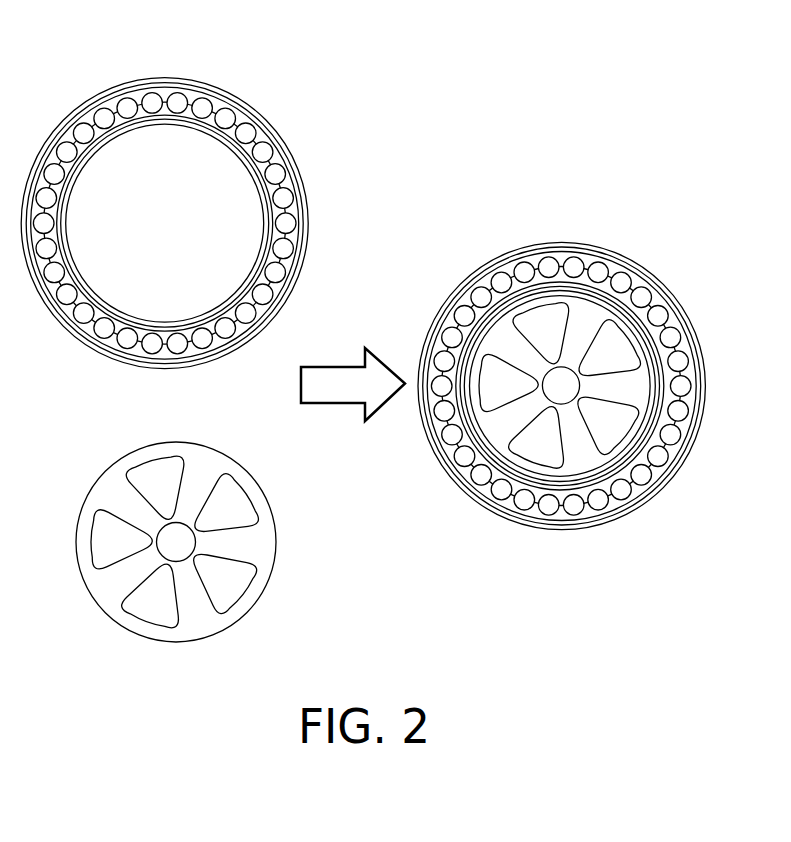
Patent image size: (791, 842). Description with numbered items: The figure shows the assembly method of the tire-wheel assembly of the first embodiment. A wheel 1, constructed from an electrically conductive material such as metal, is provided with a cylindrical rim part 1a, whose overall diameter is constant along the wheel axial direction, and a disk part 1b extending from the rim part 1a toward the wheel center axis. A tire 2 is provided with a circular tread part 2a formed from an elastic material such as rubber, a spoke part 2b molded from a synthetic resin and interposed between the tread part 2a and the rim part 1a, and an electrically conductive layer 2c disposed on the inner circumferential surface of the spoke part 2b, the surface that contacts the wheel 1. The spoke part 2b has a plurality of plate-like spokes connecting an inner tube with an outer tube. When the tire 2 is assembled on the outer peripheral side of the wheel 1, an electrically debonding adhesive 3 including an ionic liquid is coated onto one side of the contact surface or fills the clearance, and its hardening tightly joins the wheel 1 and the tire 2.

The wheel 1 is at (363, 469).
The rim part 1a is at (248, 478).
The disk part 1b is at (208, 593).
The tire 2 is at (363, 276).
The tread part 2a is at (255, 108).
The spoke part 2b is at (274, 135).
The electrically conductive layer 2c is at (240, 153).
The electrically debonding adhesive 3 is at (552, 285).